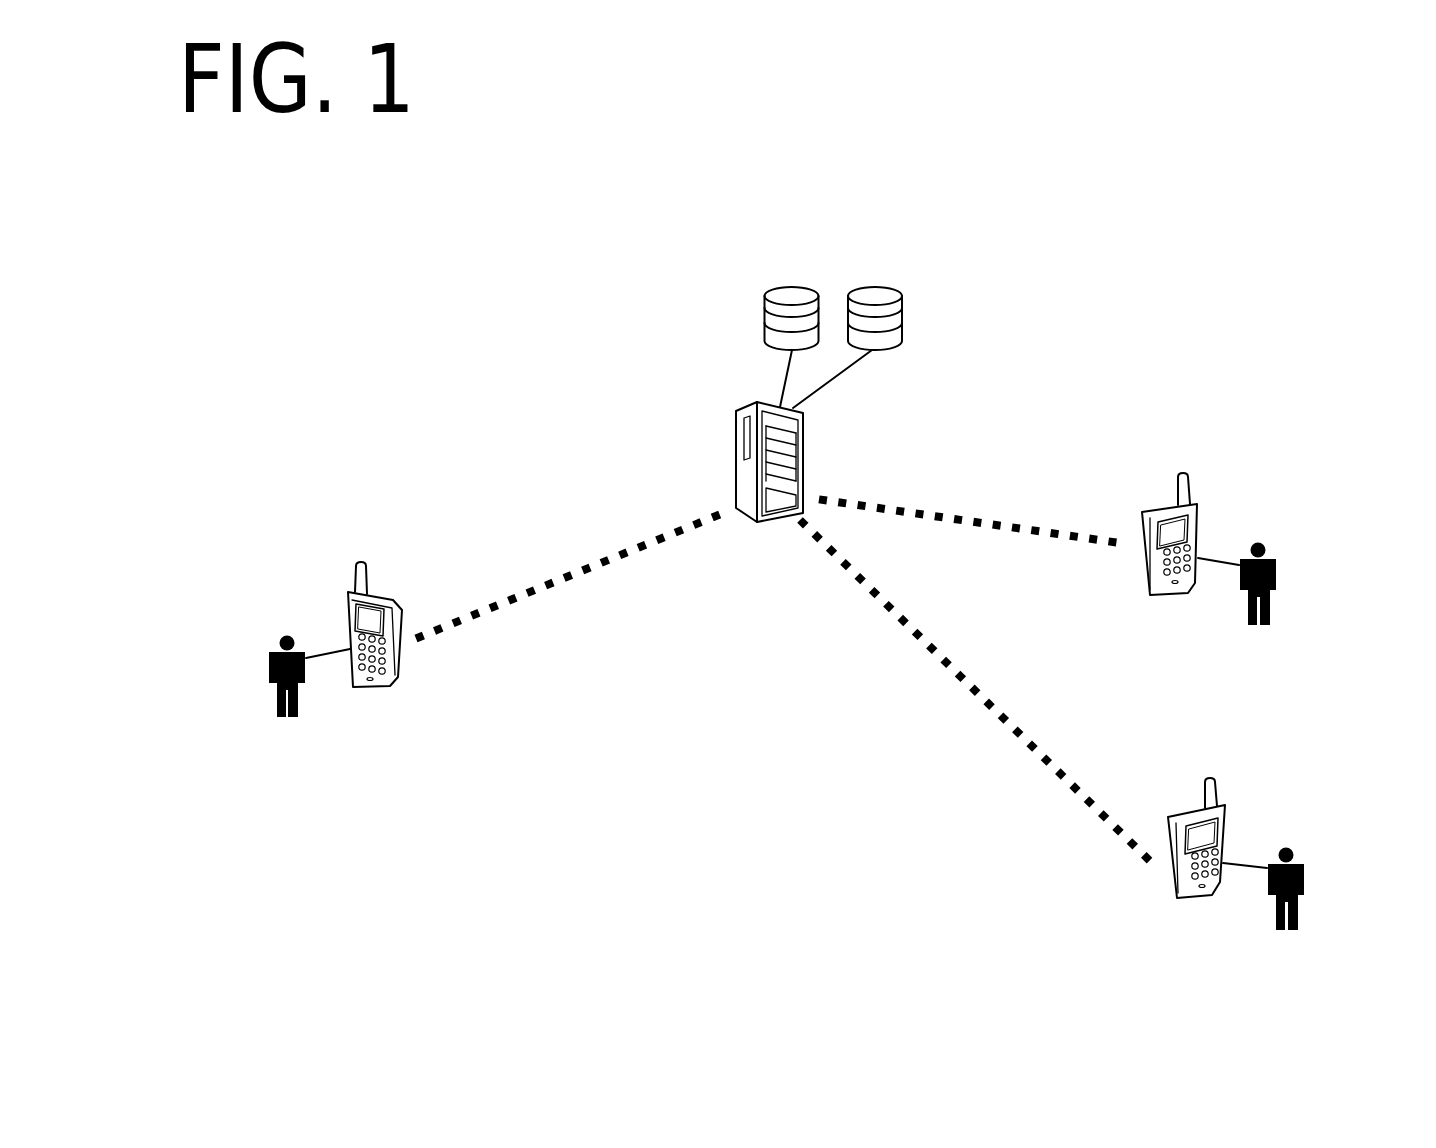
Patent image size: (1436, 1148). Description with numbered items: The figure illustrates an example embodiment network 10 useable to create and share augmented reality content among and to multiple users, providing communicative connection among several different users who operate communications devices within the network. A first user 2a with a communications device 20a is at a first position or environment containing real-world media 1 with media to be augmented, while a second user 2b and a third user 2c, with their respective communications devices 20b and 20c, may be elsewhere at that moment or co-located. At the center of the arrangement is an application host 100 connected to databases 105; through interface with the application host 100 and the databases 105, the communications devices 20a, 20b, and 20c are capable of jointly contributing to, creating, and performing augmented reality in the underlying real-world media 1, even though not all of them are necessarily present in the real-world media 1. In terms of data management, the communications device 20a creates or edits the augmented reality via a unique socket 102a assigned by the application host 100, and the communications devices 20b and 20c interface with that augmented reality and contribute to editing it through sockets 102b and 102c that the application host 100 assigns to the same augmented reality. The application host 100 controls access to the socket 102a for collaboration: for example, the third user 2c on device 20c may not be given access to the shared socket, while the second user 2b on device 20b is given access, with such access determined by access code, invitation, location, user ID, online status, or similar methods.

The real-world media 1 is at (309, 580).
The network 10 is at (783, 595).
The application host 100 is at (737, 432).
The databases 105 is at (766, 318).
The socket 102a is at (508, 596).
The socket 102b is at (933, 508).
The socket 102c is at (887, 610).
The communications device 20a is at (393, 684).
The communications device 20b is at (1160, 500).
The communications device 20c is at (1190, 806).
The first user 2a is at (274, 718).
The second user 2b is at (1268, 624).
The third user 2c is at (1297, 930).